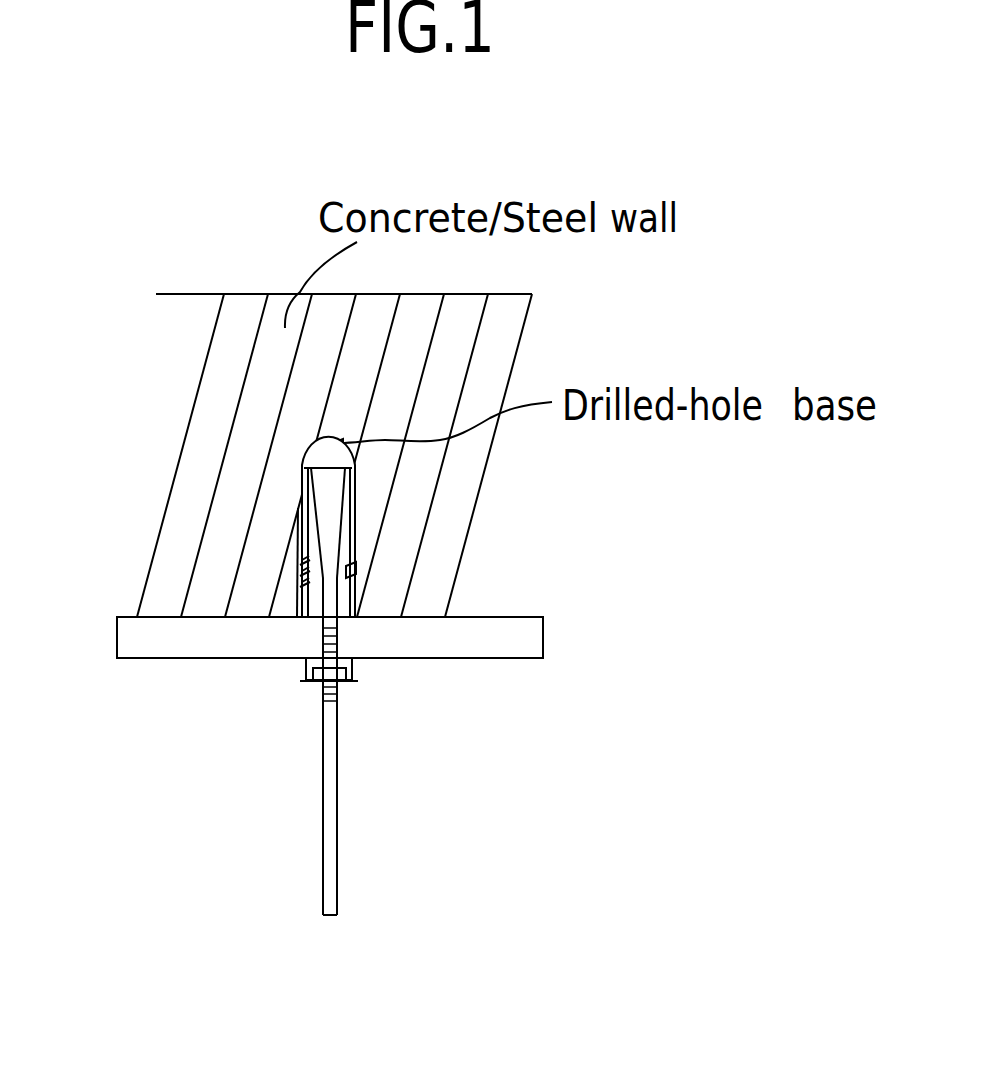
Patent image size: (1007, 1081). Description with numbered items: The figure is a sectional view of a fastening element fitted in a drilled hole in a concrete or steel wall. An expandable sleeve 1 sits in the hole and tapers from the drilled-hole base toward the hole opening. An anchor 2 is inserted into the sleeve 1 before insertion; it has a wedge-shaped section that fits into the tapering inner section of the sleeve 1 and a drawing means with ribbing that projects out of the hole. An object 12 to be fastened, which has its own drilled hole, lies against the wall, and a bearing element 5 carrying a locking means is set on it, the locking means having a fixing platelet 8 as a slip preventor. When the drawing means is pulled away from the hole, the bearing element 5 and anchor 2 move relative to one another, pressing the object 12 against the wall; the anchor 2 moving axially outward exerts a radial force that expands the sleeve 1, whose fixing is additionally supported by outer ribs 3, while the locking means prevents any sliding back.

The expandable sleeve 1 is at (362, 518).
The anchor 2 is at (340, 477).
The outer ribs 3 is at (291, 565).
The bearing element 5 is at (358, 689).
The fixing platelet 8 is at (345, 688).
The object 12 is at (552, 640).